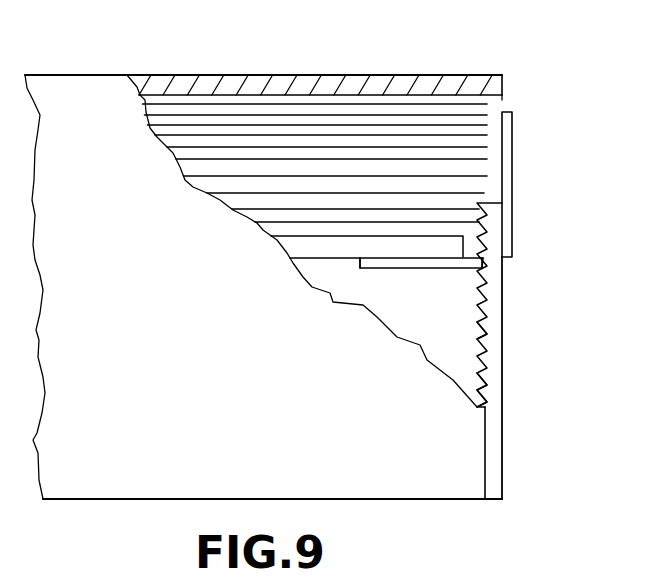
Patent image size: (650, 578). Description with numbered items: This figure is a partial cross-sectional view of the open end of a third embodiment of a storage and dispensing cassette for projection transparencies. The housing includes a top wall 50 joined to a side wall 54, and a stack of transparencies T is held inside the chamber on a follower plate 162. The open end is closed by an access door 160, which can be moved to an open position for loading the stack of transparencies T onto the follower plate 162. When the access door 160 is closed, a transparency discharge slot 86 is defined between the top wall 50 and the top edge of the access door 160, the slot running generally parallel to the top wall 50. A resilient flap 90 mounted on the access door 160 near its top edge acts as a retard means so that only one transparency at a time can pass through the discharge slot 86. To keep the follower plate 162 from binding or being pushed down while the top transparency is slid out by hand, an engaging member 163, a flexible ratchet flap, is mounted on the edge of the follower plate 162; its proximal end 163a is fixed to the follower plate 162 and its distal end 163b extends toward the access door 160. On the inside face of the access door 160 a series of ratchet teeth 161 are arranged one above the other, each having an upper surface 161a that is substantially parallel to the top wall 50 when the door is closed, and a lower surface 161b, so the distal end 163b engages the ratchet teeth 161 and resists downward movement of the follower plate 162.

The top wall 50 is at (183, 82).
The stack of transparencies T is at (372, 163).
The side wall 54 is at (120, 491).
The transparency discharge slot 86 is at (506, 99).
The resilient flap 90 is at (513, 163).
The access door 160 is at (502, 355).
The ratchet teeth 161 is at (473, 305).
The upper surface 161a is at (487, 327).
The lower surface 161b is at (480, 392).
The follower plate 162 is at (297, 247).
The engaging member 163 is at (463, 270).
The proximal end 163a is at (358, 266).
The distal end 163b is at (483, 262).